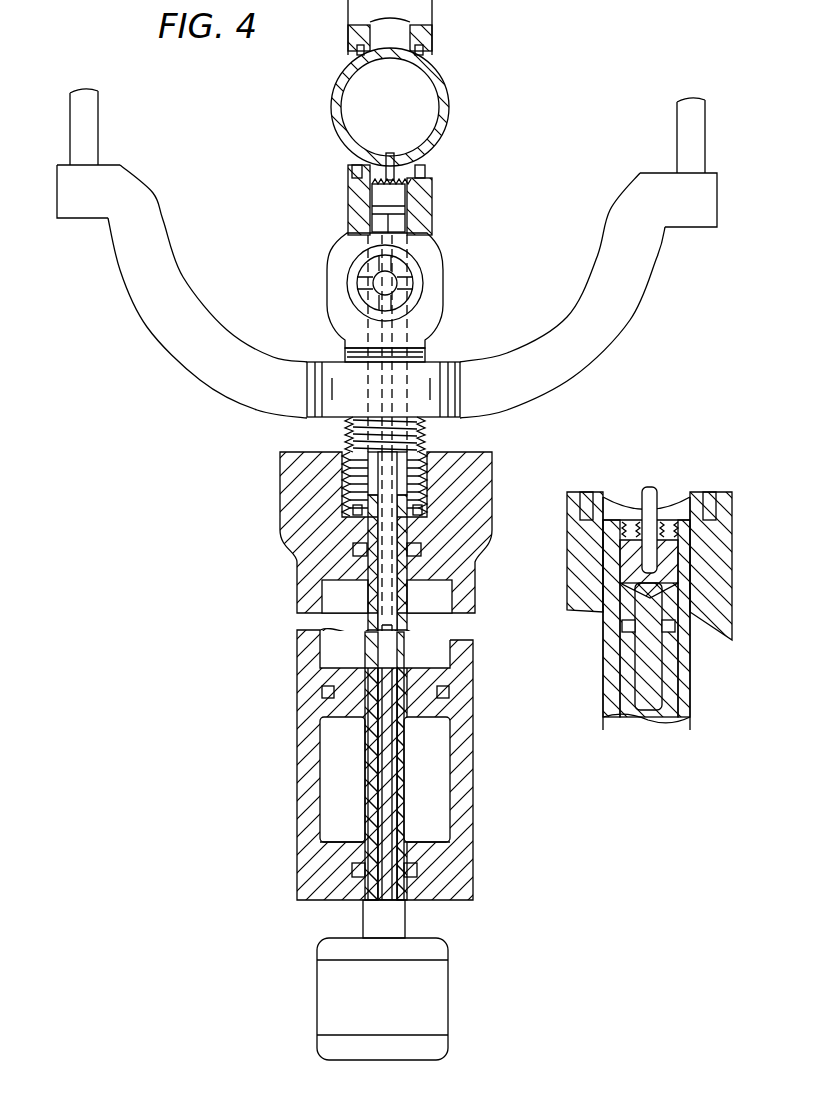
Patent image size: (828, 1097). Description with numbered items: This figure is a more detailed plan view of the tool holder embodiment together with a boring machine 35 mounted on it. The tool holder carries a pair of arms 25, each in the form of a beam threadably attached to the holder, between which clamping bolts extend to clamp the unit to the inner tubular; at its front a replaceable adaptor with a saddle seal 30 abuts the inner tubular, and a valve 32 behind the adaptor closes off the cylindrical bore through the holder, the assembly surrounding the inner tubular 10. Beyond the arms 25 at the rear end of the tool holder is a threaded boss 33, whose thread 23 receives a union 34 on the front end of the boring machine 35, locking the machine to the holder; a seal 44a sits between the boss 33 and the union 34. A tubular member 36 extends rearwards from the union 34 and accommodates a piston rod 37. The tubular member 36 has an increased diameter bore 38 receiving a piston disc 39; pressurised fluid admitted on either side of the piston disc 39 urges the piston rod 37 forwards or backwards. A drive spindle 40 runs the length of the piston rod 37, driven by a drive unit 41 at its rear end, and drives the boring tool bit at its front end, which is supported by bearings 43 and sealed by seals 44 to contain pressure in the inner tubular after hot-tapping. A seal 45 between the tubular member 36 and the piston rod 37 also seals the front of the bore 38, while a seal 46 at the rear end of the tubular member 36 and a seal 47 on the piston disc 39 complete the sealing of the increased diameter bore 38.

The steering column tube 10 is at (432, 97).
The thread 23 is at (348, 452).
The arms 25 is at (590, 303).
The saddle seal 30 is at (432, 172).
The valve 32 is at (350, 275).
The threaded boss 33 is at (432, 462).
The union 34 is at (480, 500).
The boring machine 35 is at (371, 787).
The tubular member 36 is at (305, 795).
The piston rod 37 is at (397, 772).
The increased diameter bore 38 is at (330, 830).
The piston disc 39 is at (330, 690).
The drive spindle 40 is at (390, 655).
The drive unit 41 is at (393, 1016).
The bearings 43 is at (607, 600).
The seals 44 is at (622, 623).
The seal 44a is at (356, 549).
The seal 45 is at (360, 515).
The seal 46 is at (360, 876).
The seal 47 is at (445, 690).